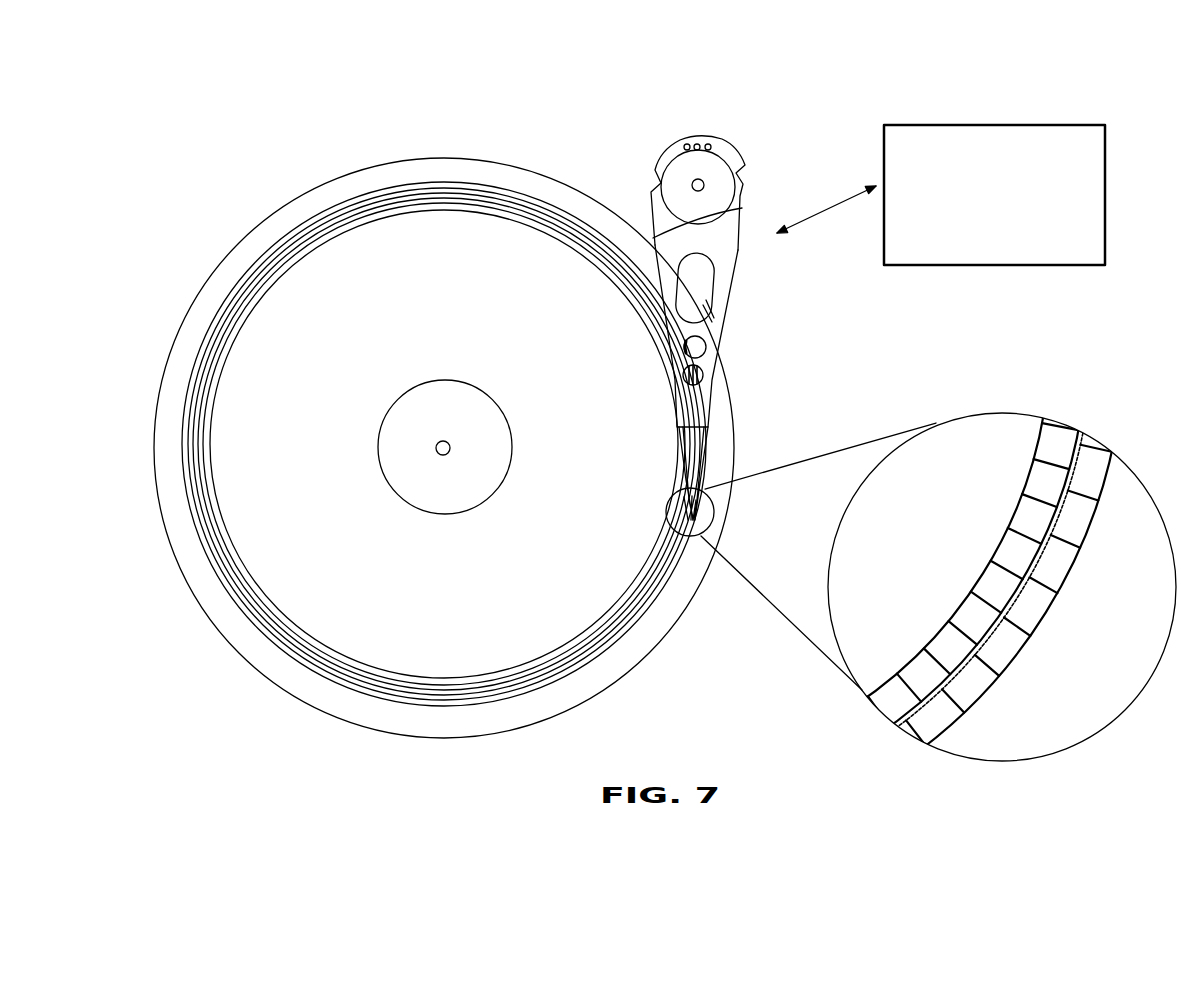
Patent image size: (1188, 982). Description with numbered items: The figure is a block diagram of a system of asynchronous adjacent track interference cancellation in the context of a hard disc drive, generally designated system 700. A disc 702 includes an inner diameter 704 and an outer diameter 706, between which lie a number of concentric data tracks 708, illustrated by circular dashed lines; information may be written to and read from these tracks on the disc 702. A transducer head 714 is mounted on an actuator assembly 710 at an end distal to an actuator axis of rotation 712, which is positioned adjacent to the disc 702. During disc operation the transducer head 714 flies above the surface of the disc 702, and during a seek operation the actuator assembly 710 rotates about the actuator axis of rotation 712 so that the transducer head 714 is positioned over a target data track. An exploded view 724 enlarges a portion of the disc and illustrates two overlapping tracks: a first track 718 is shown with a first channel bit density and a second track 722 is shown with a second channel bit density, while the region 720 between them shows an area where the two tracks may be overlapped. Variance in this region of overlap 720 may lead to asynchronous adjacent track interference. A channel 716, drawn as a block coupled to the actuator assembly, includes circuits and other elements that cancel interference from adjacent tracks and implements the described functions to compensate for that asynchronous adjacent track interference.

The system of asynchronous interference cancellation 700 is at (216, 134).
The disc 702 is at (512, 166).
The inner diameter 704 is at (416, 387).
The outer diameter 706 is at (338, 203).
The concentric data tracks 708 is at (293, 655).
The actuator assembly 710 is at (738, 251).
The actuator axis of rotation 712 is at (706, 182).
The transducer head 714 is at (714, 507).
The channel 716 is at (1057, 206).
The first track 718 is at (864, 710).
The region of overlap 720 is at (888, 731).
The second track 722 is at (912, 751).
The exploded view 724 is at (1080, 745).